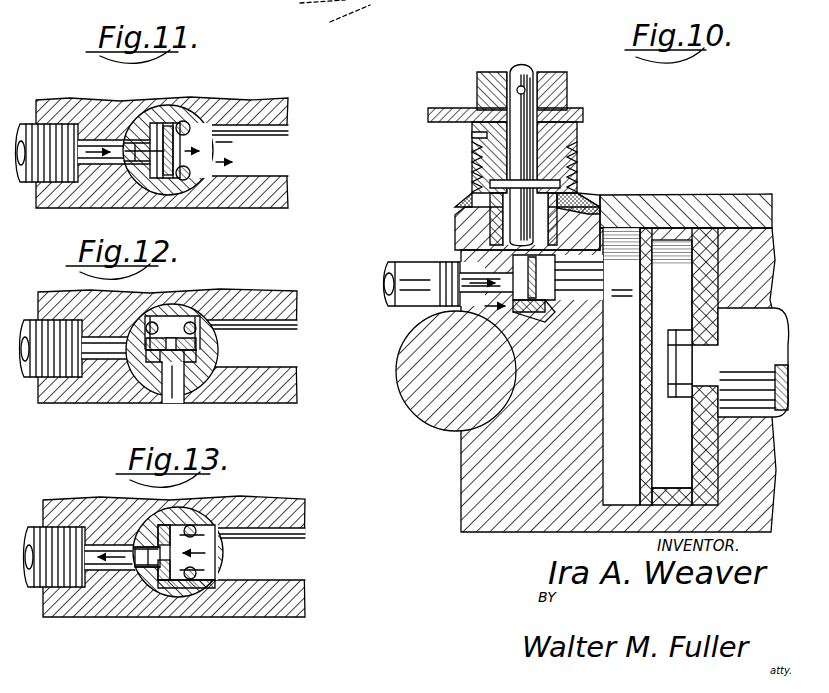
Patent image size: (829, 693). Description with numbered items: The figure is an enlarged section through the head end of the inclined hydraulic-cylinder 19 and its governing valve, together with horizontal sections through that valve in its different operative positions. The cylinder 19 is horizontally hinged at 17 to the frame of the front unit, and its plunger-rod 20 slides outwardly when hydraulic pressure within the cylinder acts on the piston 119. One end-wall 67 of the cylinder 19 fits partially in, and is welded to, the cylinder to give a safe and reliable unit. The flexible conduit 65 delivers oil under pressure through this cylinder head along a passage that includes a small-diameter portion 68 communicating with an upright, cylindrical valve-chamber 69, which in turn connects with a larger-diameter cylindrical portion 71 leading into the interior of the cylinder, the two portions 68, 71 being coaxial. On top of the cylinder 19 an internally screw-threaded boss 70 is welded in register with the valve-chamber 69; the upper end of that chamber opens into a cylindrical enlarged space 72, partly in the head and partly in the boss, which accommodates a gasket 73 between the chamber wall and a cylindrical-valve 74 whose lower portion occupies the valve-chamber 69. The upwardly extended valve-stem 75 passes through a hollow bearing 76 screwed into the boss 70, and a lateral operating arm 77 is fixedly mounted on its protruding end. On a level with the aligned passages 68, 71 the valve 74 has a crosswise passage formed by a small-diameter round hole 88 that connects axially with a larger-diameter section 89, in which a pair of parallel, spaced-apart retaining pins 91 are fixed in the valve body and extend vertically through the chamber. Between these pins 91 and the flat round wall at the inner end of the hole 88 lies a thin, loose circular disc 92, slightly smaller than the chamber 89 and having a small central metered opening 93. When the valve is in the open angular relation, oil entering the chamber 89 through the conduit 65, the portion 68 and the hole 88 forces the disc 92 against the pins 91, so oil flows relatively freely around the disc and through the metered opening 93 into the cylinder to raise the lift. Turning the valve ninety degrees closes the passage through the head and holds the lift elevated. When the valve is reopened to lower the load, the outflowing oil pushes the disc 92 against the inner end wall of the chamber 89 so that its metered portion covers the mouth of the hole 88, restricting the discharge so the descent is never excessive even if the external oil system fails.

In FIG. 10, the hinge 17 is at (436, 412).
In FIG. 10, the hydraulic-cylinder 19 is at (689, 198).
In FIG. 10, the plunger-rod 20 is at (740, 362).
In FIG. 11, the conduit 65 is at (62, 103).
In FIG. 12, the conduit 65 is at (34, 300).
In FIG. 13, the conduit 65 is at (42, 525).
In FIG. 10, the conduit 65 is at (398, 266).
In FIG. 11, the end-wall 67 is at (272, 104).
In FIG. 12, the end-wall 67 is at (285, 295).
In FIG. 13, the end-wall 67 is at (290, 502).
In FIG. 10, the end-wall 67 is at (482, 480).
In FIG. 11, the small-diameter portion 68 is at (104, 142).
In FIG. 12, the small-diameter portion 68 is at (108, 338).
In FIG. 13, the small-diameter portion 68 is at (102, 545).
In FIG. 10, the small-diameter portion 68 is at (482, 262).
In FIG. 11, the valve-chamber 69 is at (195, 120).
In FIG. 12, the valve-chamber 69 is at (172, 350).
In FIG. 13, the valve-chamber 69 is at (200, 598).
In FIG. 10, the valve-chamber 69 is at (500, 302).
In FIG. 10, the boss 70 is at (576, 144).
In FIG. 11, the larger-diameter cylindrical portion 71 is at (268, 143).
In FIG. 12, the larger-diameter cylindrical portion 71 is at (286, 356).
In FIG. 13, the larger-diameter cylindrical portion 71 is at (285, 559).
In FIG. 10, the larger-diameter cylindrical portion 71 is at (660, 366).
In FIG. 10, the enlarged space 72 is at (604, 204).
In FIG. 10, the gasket 73 is at (586, 194).
In FIG. 12, the cylindrical-valve 74 is at (215, 349).
In FIG. 13, the cylindrical-valve 74 is at (186, 590).
In FIG. 10, the cylindrical-valve 74 is at (472, 220).
In FIG. 10, the valve-stem 75 is at (521, 68).
In FIG. 10, the hollow bearing 76 is at (474, 152).
In FIG. 10, the operating arm 77 is at (444, 109).
In FIG. 11, the round hole 88 is at (136, 160).
In FIG. 12, the round hole 88 is at (174, 404).
In FIG. 13, the round hole 88 is at (140, 567).
In FIG. 11, the larger-diameter section 89 is at (205, 156).
In FIG. 12, the larger-diameter section 89 is at (188, 320).
In FIG. 13, the larger-diameter section 89 is at (212, 532).
In FIG. 12, the retaining pins 91 is at (186, 322).
In FIG. 13, the retaining pins 91 is at (196, 572).
In FIG. 10, the retaining pins 91 is at (600, 325).
In FIG. 11, the circular disc 92 is at (175, 180).
In FIG. 12, the circular disc 92 is at (152, 360).
In FIG. 13, the circular disc 92 is at (165, 582).
In FIG. 10, the circular disc 92 is at (512, 306).
In FIG. 11, the metered opening 93 is at (168, 120).
In FIG. 12, the metered opening 93 is at (180, 353).
In FIG. 13, the metered opening 93 is at (143, 567).
In FIG. 10, the piston 119 is at (710, 320).